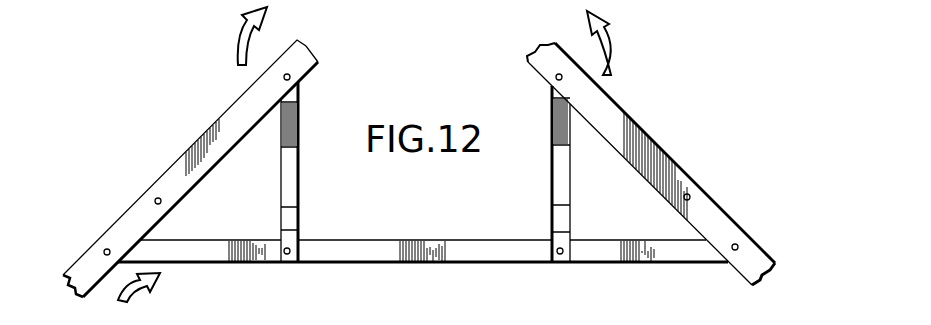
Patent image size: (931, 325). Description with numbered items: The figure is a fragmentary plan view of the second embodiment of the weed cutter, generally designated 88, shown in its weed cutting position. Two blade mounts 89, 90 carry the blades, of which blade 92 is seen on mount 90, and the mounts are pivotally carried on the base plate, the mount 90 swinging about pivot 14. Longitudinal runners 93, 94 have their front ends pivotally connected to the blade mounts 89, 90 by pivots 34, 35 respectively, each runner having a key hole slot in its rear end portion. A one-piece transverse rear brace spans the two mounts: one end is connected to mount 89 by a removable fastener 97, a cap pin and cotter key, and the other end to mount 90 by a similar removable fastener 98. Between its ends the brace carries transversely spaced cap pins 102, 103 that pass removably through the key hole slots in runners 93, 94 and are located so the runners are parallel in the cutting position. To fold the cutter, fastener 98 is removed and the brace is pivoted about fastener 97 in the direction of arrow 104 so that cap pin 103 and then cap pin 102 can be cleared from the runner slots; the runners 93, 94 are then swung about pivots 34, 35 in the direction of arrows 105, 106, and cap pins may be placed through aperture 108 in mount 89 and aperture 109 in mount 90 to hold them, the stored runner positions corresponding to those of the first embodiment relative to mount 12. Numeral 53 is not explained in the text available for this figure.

The mount 12 is at (728, 0).
The pivot 14 is at (540, 0).
The pivot 34 is at (297, 78).
The pivot 35 is at (553, 77).
The member 53 is at (492, 0).
The second embodiment 88 is at (178, 150).
The blade mount 89 is at (228, 140).
The blade mount 90 is at (674, 166).
The blade 92 is at (773, 260).
The longitudinal runner 93 is at (290, 168).
The longitudinal runner 94 is at (552, 125).
The removable fastener 97 is at (104, 249).
The removable fastener 98 is at (739, 244).
The cap pin 102 is at (287, 257).
The cap pin 103 is at (562, 257).
The arrow 104 is at (157, 282).
The arrow 105 is at (244, 46).
The arrow 106 is at (616, 50).
The aperture 108 is at (155, 198).
The aperture 109 is at (691, 193).